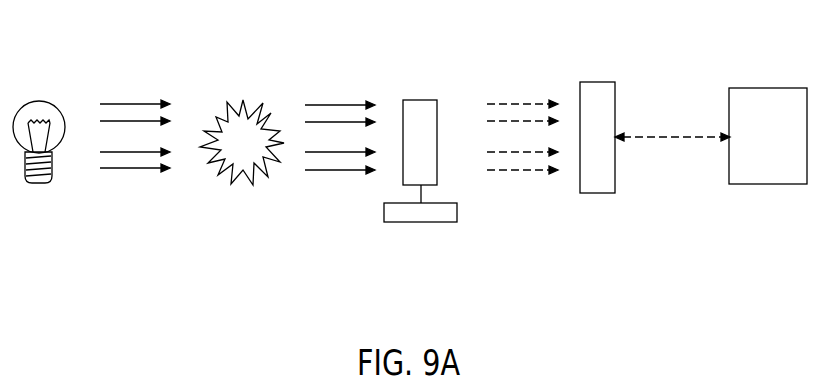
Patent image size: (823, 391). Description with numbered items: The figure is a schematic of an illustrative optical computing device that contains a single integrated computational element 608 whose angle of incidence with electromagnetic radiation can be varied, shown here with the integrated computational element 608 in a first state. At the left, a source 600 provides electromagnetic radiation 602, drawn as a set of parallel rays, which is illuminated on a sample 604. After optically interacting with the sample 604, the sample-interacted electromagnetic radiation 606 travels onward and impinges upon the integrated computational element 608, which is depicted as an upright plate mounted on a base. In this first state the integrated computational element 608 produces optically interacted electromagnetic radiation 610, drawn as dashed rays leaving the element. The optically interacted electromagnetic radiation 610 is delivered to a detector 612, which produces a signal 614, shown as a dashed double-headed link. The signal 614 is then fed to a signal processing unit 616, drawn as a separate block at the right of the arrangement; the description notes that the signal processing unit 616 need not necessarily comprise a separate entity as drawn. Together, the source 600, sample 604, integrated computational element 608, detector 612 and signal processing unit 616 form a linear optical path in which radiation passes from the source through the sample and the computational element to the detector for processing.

The source 600 is at (35, 108).
The electromagnetic radiation 602 is at (123, 102).
The sample 604 is at (220, 120).
The sample-interacted electromagnetic radiation 606 is at (318, 102).
The integrated computational element 608 is at (422, 108).
The optically interacted electromagnetic radiation 610 is at (502, 102).
The detector 612 is at (600, 88).
The signal 614 is at (658, 137).
The signal processing unit 616 is at (750, 149).